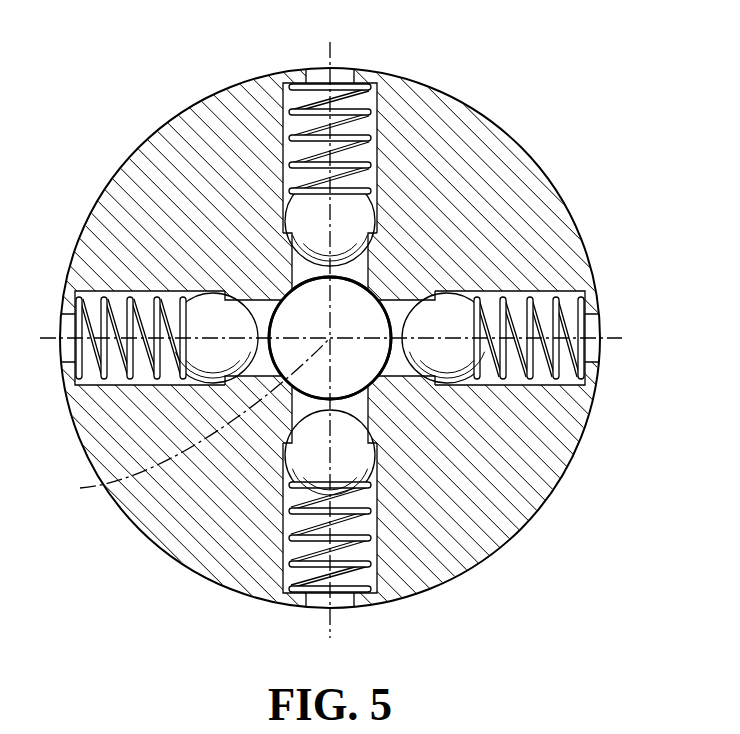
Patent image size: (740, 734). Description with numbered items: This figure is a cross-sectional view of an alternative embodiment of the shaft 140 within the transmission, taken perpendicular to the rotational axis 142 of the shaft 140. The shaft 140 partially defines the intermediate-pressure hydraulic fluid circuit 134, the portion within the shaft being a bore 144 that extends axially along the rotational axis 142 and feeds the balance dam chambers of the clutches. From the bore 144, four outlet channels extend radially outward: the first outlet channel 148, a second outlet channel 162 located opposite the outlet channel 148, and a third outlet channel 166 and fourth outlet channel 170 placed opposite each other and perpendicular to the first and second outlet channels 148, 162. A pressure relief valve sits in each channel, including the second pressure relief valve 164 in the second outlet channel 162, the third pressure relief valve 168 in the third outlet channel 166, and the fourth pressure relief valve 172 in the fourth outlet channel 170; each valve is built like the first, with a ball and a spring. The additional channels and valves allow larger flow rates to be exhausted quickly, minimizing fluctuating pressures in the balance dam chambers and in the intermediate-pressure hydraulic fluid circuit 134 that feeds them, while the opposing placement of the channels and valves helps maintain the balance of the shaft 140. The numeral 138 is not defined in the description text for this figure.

The intermediate-pressure hydraulic fluid circuit 134 is at (350, 323).
The detent assembly 138 is at (262, 136).
The shaft 140 is at (547, 73).
The rotational axis 142 is at (331, 340).
The bore 144 is at (310, 367).
The outlet channel 148 is at (365, 120).
The second outlet channel 162 is at (365, 553).
The second pressure relief valve 164 is at (263, 527).
The third outlet channel 166 is at (542, 300).
The third pressure relief valve 168 is at (528, 398).
The fourth outlet channel 170 is at (145, 373).
The fourth pressure relief valve 172 is at (125, 278).